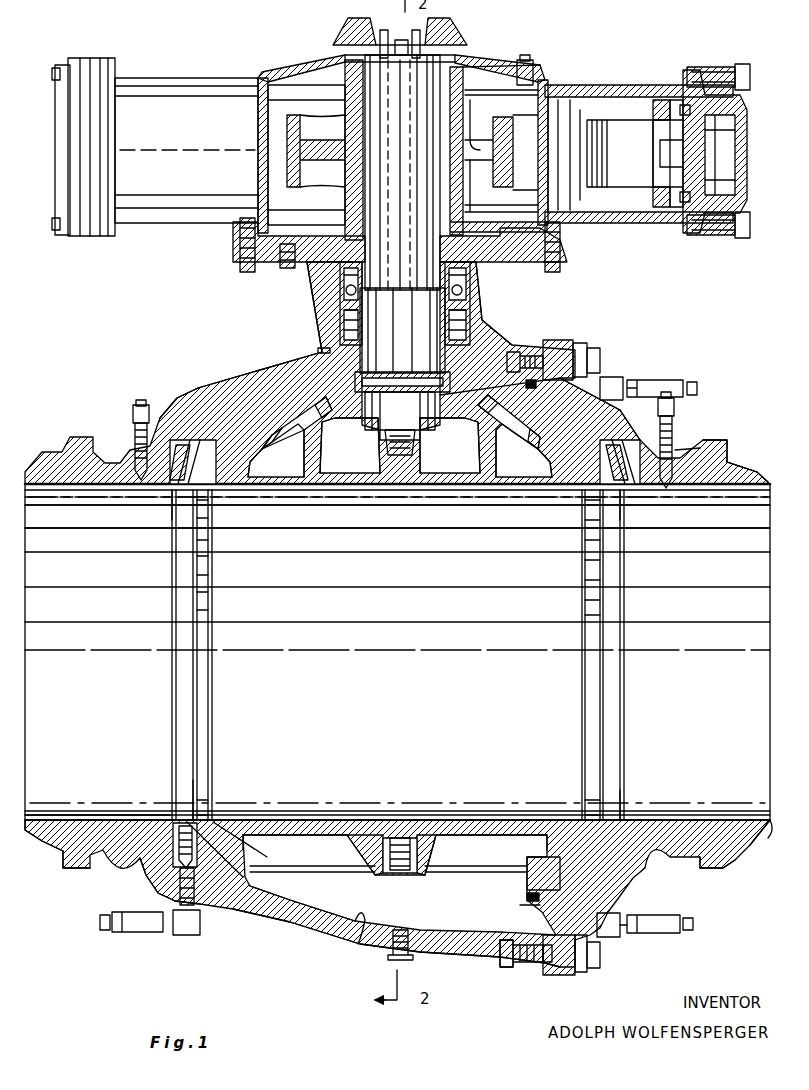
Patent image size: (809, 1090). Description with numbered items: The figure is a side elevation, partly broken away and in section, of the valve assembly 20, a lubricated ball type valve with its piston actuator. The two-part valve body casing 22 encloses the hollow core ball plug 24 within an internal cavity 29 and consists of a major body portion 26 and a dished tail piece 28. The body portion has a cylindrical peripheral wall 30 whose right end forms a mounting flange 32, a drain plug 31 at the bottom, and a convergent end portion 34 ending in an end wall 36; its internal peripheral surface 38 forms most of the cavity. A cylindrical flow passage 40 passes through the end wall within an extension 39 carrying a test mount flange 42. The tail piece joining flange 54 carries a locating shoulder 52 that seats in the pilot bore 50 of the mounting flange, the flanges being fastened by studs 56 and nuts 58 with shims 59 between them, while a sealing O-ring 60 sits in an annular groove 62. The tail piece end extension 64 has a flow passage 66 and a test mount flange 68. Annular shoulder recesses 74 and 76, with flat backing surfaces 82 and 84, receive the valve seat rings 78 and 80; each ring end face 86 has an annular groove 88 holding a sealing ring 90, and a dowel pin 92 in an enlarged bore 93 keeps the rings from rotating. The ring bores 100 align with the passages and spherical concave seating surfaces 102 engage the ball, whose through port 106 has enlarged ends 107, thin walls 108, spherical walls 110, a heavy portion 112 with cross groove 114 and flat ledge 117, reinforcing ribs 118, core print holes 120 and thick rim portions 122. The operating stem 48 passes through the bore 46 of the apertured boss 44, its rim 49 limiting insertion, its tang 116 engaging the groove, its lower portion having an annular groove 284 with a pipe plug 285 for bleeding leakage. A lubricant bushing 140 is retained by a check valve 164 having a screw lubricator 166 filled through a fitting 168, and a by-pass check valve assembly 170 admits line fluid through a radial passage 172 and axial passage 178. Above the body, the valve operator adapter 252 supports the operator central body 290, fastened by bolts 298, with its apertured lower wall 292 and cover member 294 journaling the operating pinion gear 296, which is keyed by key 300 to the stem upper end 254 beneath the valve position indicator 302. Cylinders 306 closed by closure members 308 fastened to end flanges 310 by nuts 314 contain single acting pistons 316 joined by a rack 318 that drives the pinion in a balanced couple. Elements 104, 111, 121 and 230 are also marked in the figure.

The valve assembly 20 is at (198, 346).
The valve body casing 22 is at (548, 345).
The ball plug 24 is at (398, 490).
The major body portion 26 is at (258, 388).
The tail piece 28 is at (660, 864).
The internal cavity 29 is at (305, 934).
The peripheral wall 30 is at (440, 952).
The drain plug 31 is at (400, 930).
The mounting flange 32 is at (530, 350).
The end portion of peripheral wall 34 is at (278, 930).
The end wall 36 is at (145, 877).
The internal peripheral surface 38 is at (356, 945).
The extension 39 is at (92, 818).
The cylindrical flow passage 40 is at (48, 842).
The test mount flange 42 is at (62, 870).
The apertured boss 44 is at (312, 306).
The bore 46 is at (348, 336).
The operating stem 48 is at (478, 322).
The rim 49 is at (386, 374).
The pilot bore 50 is at (525, 906).
The locating shoulder 52 is at (510, 968).
The joining flange 54 is at (558, 976).
The studs 56 is at (576, 344).
The nuts 58 is at (592, 352).
The shims 59 is at (546, 975).
The sealing O-ring 60 is at (526, 386).
The annular groove 62 is at (524, 896).
The end extension 64 is at (738, 852).
The flow passage 66 is at (768, 828).
The test mount flange 68 is at (718, 440).
The annular shoulder recess 74 is at (195, 450).
The annular shoulder recess 76 is at (610, 440).
The valve seat ring 78 is at (250, 458).
The valve seat ring 80 is at (572, 452).
The flat surface 82 is at (178, 488).
The flat surface 84 is at (632, 488).
The end face 86 is at (736, 455).
The annular groove 88 is at (172, 822).
The sealing ring 90 is at (178, 440).
The dowel pin 92 is at (652, 822).
The enlarged bore 93 is at (639, 909).
The seat ring bore 100 is at (615, 495).
The spherically concave seating surface 102 is at (556, 490).
The band 104 is at (255, 490).
The through port 106 is at (478, 490).
The ends of through port 107 is at (210, 812).
The flow passage defining walls 108 is at (318, 490).
The spherically surfaced walls 110 is at (308, 846).
The opening 111 is at (400, 450).
The heavy portion 112 is at (350, 445).
The cross groove 114 is at (384, 402).
The tang 116 is at (450, 393).
The flat ledge 117 is at (450, 445).
The internal rib reinforcing structures 118 is at (398, 870).
The holes 120 is at (401, 423).
The bolt 121 is at (132, 427).
The rim portions 122 is at (275, 872).
The lubricant bushing 140 is at (178, 892).
The check valve 164 is at (618, 382).
The extrusion screw lubricator 166 is at (668, 380).
The lubricant fitting 168 is at (696, 384).
The by-pass check valve assembly 170 is at (675, 432).
The radial passage 172 is at (672, 488).
The axial passage 178 is at (672, 452).
The block 230 is at (560, 887).
The valve operator adapter 252 is at (520, 262).
The stem upper end 254 is at (348, 126).
The annular groove 284 is at (376, 346).
The pipe plug 285 is at (320, 352).
The central body 290 is at (548, 85).
The apertured lower wall 292 is at (488, 218).
The cover member 294 is at (487, 62).
The operating pinion gear 296 is at (490, 118).
The bolts 298 is at (247, 272).
The key 300 is at (418, 192).
The valve position indicator 302 is at (376, 44).
The cylinders 306 is at (628, 225).
The closure members 308 is at (742, 130).
The cylinder end flanges 310 is at (698, 240).
The nuts 314 is at (742, 68).
The single acting piston 316 is at (678, 110).
The rack 318 is at (617, 125).